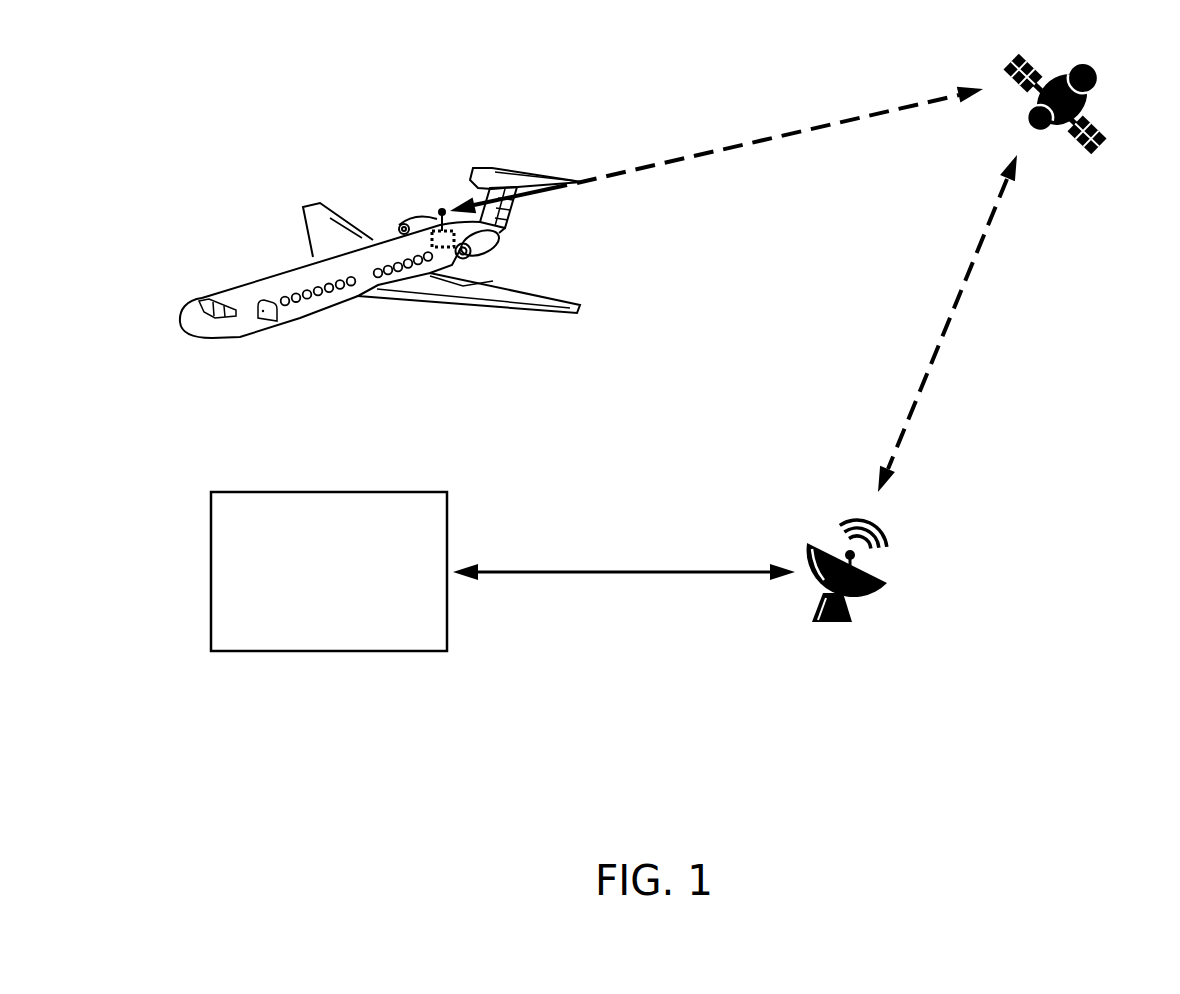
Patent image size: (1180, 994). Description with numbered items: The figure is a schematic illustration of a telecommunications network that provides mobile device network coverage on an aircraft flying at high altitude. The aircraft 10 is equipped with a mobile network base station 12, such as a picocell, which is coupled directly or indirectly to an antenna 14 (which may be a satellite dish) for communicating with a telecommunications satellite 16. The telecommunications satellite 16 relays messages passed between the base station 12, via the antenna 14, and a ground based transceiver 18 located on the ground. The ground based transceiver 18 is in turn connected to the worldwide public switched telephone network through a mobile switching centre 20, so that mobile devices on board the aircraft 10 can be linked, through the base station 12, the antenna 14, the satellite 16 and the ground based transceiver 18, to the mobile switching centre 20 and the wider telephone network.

The aircraft 10 is at (250, 276).
The mobile network base station 12 is at (430, 230).
The antenna 14 is at (440, 208).
The telecommunications satellite 16 is at (1096, 162).
The ground based transceiver 18 is at (797, 536).
The mobile switching centre 20 is at (357, 491).